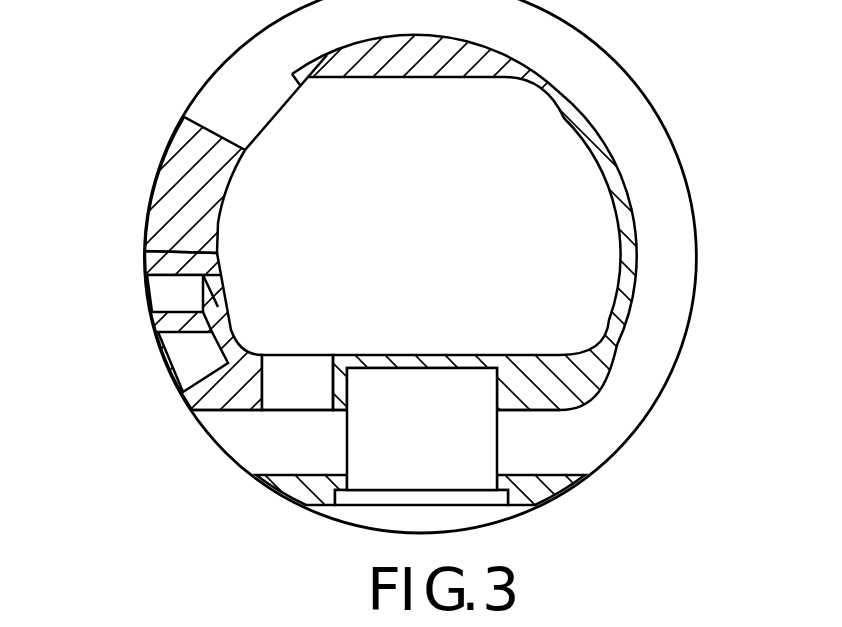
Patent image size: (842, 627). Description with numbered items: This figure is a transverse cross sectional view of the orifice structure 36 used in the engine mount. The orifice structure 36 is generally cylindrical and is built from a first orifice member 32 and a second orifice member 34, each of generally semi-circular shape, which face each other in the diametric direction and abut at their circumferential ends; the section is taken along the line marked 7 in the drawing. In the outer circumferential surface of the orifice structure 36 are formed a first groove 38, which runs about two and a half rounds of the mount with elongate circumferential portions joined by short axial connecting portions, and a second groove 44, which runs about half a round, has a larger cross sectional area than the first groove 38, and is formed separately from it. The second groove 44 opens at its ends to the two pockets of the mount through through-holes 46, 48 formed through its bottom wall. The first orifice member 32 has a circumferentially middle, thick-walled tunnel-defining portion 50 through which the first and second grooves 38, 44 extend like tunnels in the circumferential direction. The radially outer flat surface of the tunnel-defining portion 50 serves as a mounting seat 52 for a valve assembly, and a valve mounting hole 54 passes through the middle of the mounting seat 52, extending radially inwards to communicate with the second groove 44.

The section line 7- 7 is at (96, 279).
The first orifice member 32 is at (150, 348).
The second orifice member 34 is at (148, 172).
The orifice structure 36 is at (688, 87).
The first groove 38 is at (165, 275).
The second groove 44 is at (628, 197).
The through-hole 46 is at (268, 380).
The through-hole 48 is at (296, 80).
The tunnel-defining portion 50 is at (524, 372).
The mounting seat 52 is at (526, 505).
The valve mounting hole 54 is at (497, 395).